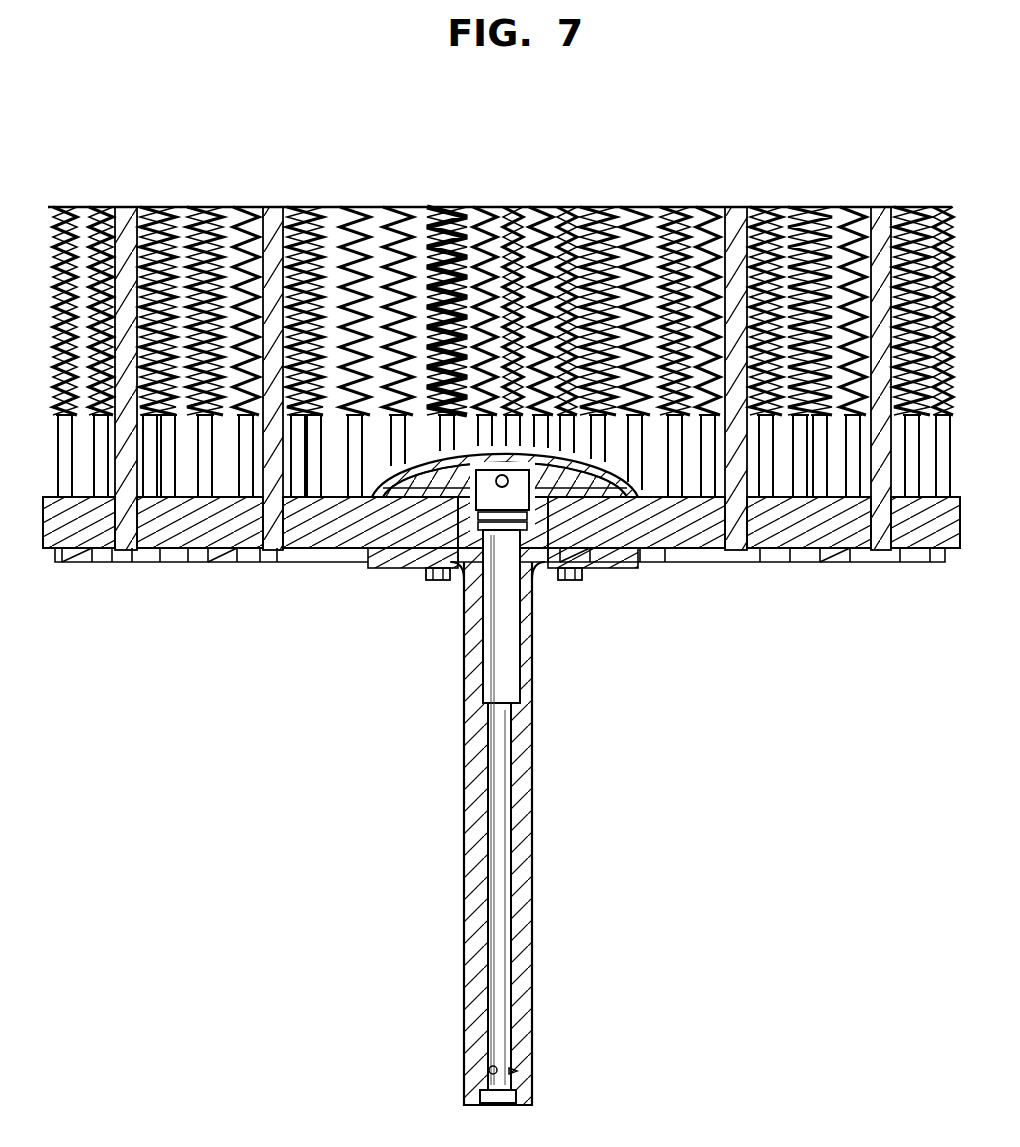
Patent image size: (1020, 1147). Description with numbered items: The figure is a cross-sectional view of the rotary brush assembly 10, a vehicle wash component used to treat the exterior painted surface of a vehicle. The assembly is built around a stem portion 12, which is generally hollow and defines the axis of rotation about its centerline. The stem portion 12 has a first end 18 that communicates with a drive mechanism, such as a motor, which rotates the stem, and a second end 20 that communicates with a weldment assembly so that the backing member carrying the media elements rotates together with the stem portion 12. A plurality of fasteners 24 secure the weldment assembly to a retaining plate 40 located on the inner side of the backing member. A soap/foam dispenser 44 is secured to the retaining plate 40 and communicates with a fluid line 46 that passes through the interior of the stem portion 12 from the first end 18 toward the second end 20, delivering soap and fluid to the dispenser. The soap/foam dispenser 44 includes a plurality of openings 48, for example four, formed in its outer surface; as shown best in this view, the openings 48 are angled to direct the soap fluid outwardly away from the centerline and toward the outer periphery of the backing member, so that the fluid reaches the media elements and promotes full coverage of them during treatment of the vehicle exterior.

The rotary brush assembly 10 is at (702, 668).
The stem portion 12 is at (533, 935).
The first end 18 is at (532, 1098).
The second end 20 is at (528, 572).
The fasteners 24 is at (572, 582).
The retaining plate 40 is at (420, 447).
The soap/foam dispenser 44 is at (500, 452).
The fluid line 46 is at (497, 812).
The openings 48 is at (445, 490).